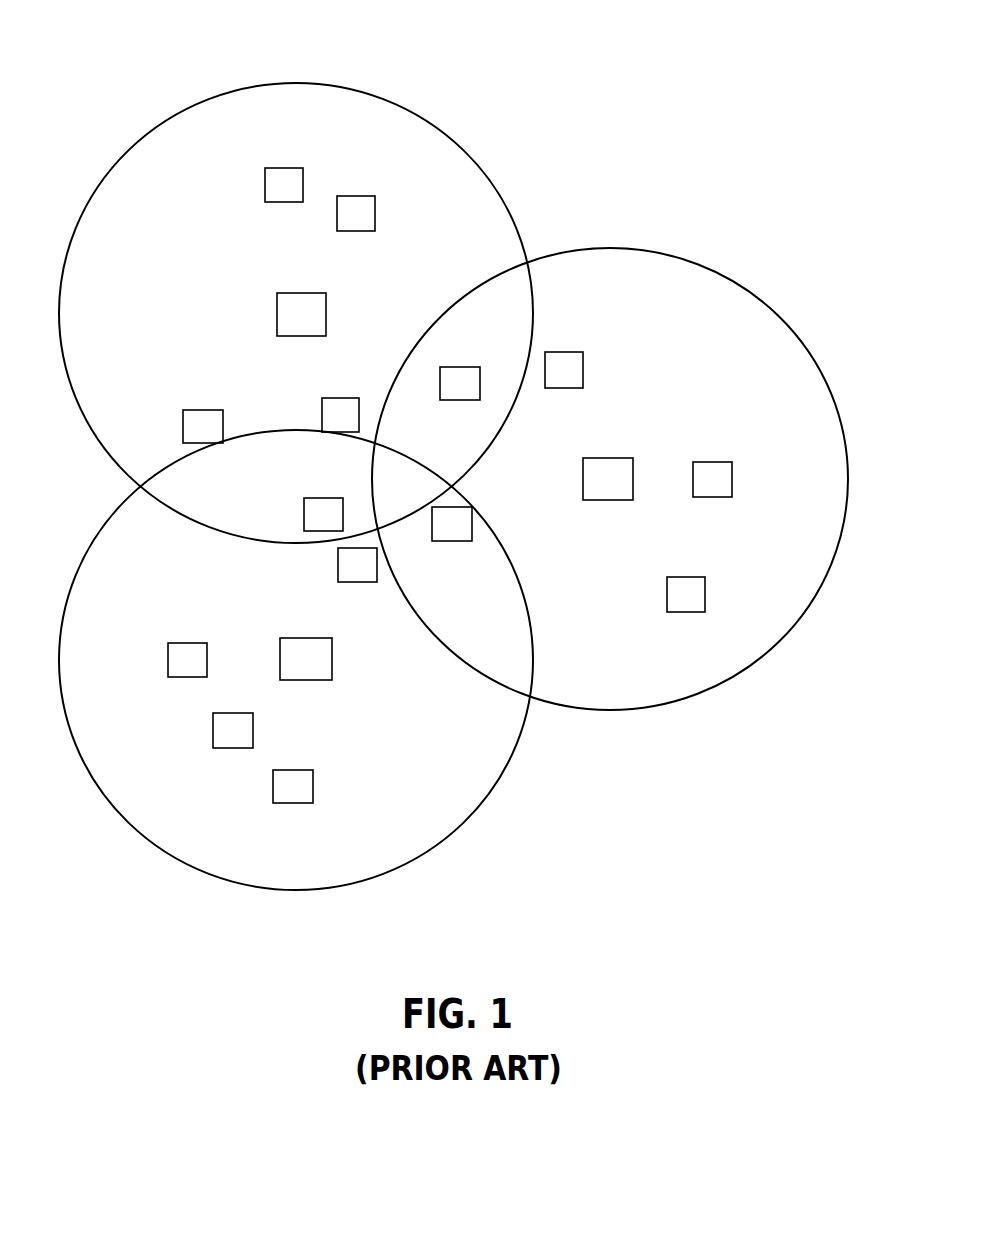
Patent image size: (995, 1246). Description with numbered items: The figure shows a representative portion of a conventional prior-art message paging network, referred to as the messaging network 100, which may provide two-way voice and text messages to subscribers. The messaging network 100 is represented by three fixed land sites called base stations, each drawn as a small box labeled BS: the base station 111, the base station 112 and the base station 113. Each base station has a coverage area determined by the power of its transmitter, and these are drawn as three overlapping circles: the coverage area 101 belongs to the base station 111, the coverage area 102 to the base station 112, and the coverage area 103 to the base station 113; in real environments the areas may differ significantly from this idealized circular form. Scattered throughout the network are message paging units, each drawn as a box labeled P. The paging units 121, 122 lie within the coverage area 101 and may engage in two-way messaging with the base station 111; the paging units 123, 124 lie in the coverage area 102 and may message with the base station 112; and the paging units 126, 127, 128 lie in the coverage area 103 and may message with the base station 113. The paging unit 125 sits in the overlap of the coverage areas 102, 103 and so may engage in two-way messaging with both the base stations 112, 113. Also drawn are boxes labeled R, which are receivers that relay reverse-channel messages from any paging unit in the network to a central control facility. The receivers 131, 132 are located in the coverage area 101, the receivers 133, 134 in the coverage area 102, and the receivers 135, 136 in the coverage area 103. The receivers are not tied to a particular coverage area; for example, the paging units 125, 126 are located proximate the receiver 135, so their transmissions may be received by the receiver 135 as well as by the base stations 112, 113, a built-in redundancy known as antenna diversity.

The messaging network 100 is at (636, 124).
The coverage area 101 is at (295, 83).
The coverage area 102 is at (612, 710).
The coverage area 103 is at (303, 890).
The base station 111 is at (277, 310).
The base station 112 is at (583, 477).
The base station 113 is at (305, 680).
The paging unit 121 is at (335, 398).
The paging unit 122 is at (265, 183).
The paging unit 123 is at (583, 367).
The paging unit 124 is at (712, 462).
The paging unit 125 is at (455, 541).
The paging unit 126 is at (362, 582).
The paging unit 127 is at (313, 787).
The paging unit 128 is at (185, 643).
The receiver 131 is at (345, 196).
The receiver 132 is at (203, 410).
The receiver 133 is at (460, 400).
The receiver 134 is at (686, 577).
The receiver 135 is at (304, 510).
The receiver 136 is at (213, 728).